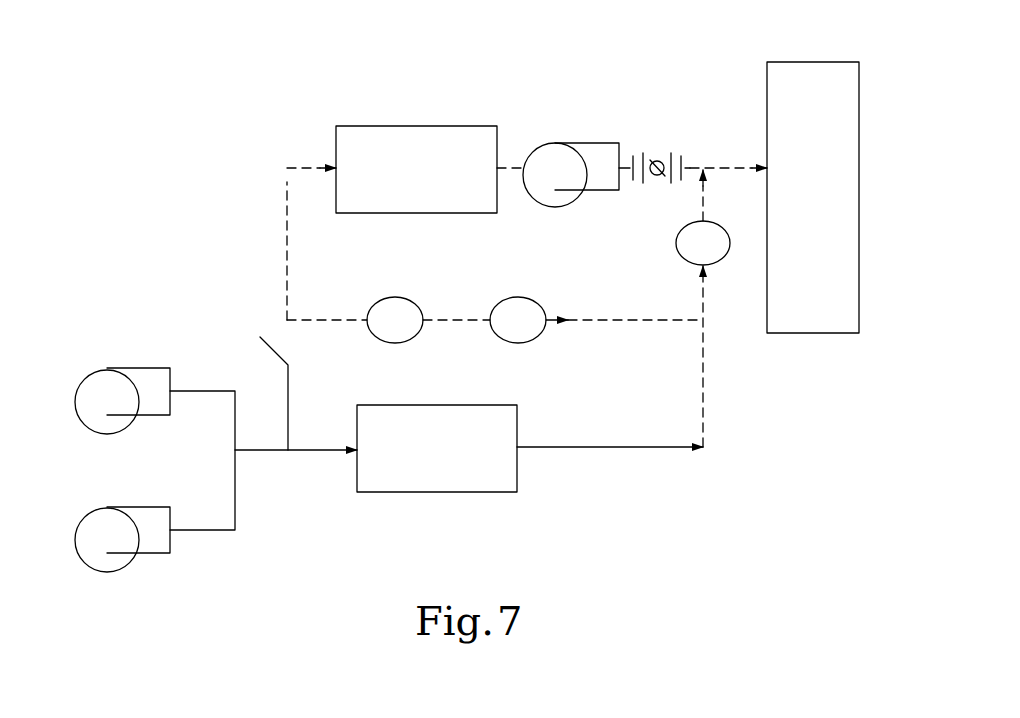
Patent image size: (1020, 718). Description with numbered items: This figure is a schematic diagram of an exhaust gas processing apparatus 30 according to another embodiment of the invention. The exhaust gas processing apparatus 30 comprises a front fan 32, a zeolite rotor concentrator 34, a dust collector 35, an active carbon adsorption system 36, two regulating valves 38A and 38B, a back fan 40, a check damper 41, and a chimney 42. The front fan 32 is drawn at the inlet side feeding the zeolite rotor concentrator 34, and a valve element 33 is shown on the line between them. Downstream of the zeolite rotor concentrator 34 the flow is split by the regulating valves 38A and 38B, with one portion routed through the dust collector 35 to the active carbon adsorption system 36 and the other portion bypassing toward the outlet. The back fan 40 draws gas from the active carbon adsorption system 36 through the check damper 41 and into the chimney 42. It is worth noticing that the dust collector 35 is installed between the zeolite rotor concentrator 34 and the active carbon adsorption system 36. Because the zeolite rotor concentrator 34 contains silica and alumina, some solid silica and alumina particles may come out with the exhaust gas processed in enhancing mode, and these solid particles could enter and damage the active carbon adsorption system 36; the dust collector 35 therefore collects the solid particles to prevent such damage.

The exhaust gas processing apparatus 30 is at (240, 72).
The front fan 32 is at (80, 337).
The shut-off valve 33 is at (268, 330).
The zeolite rotor concentrator 34 is at (437, 492).
The dust collector 35 is at (383, 298).
The active carbon adsorption system 36 is at (413, 126).
The regulating valve 38A is at (505, 298).
The regulating valve 38B is at (725, 260).
The back fan 40 is at (585, 143).
The check damper 41 is at (657, 160).
The chimney 42 is at (859, 120).